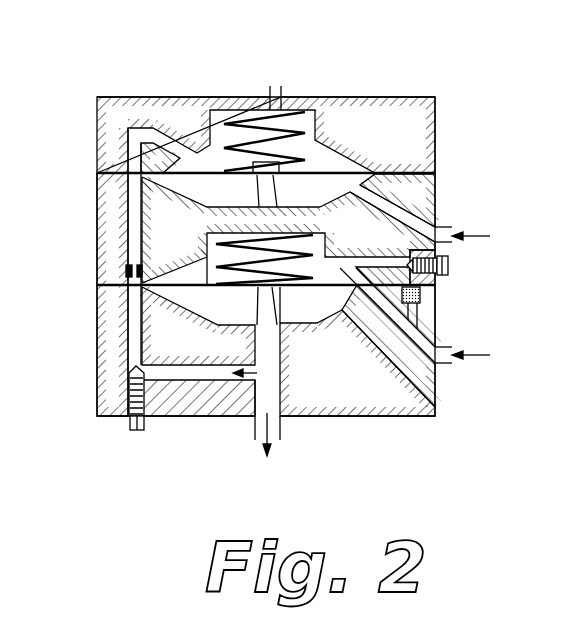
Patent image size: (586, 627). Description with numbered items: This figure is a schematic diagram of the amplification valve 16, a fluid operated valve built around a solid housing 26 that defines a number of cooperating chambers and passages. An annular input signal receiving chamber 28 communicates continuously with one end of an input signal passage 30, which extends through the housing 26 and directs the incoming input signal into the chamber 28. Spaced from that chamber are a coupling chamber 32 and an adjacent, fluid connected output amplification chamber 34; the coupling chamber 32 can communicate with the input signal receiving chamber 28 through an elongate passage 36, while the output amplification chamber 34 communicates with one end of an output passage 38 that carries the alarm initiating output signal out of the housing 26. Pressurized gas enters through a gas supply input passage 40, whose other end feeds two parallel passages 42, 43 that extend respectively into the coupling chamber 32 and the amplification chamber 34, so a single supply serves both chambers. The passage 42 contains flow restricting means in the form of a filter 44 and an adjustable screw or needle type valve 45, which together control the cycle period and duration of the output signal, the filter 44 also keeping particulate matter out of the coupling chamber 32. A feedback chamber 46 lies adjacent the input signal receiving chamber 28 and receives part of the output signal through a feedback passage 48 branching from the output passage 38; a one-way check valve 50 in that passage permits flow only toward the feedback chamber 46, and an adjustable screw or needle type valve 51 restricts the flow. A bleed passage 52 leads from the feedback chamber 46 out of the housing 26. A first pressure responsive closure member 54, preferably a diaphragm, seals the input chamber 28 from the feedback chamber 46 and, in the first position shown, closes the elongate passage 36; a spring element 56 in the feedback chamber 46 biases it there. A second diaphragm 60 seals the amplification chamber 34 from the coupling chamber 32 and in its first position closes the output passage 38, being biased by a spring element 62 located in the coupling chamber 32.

The amplification valve 16 is at (391, 71).
The housing 26 is at (442, 181).
The input signal receiving chamber 28 is at (324, 203).
The input signal passage 30 is at (437, 201).
The coupling chamber 32 is at (203, 257).
The output amplification chamber 34 is at (189, 307).
The elongate passage 36 is at (213, 222).
The output passage 38 is at (256, 397).
The gas supply input passage 40 is at (427, 343).
The passage 42 is at (420, 327).
The passage 43 is at (379, 325).
The filter 44 is at (424, 291).
The adjustable screw or needle type valve 45 is at (450, 258).
The feedback chamber 46 is at (337, 158).
The feedback passage 48 is at (127, 230).
The one-way check valve 50 is at (126, 268).
The adjustable screw or needle type valve 51 is at (133, 432).
The bleed passage 52 is at (273, 88).
The first movable pressure responsive closure member 54 is at (205, 176).
The spring element 56 is at (241, 120).
The second pressure responsive movable closure member 60 is at (199, 288).
The spring element 62 is at (317, 262).